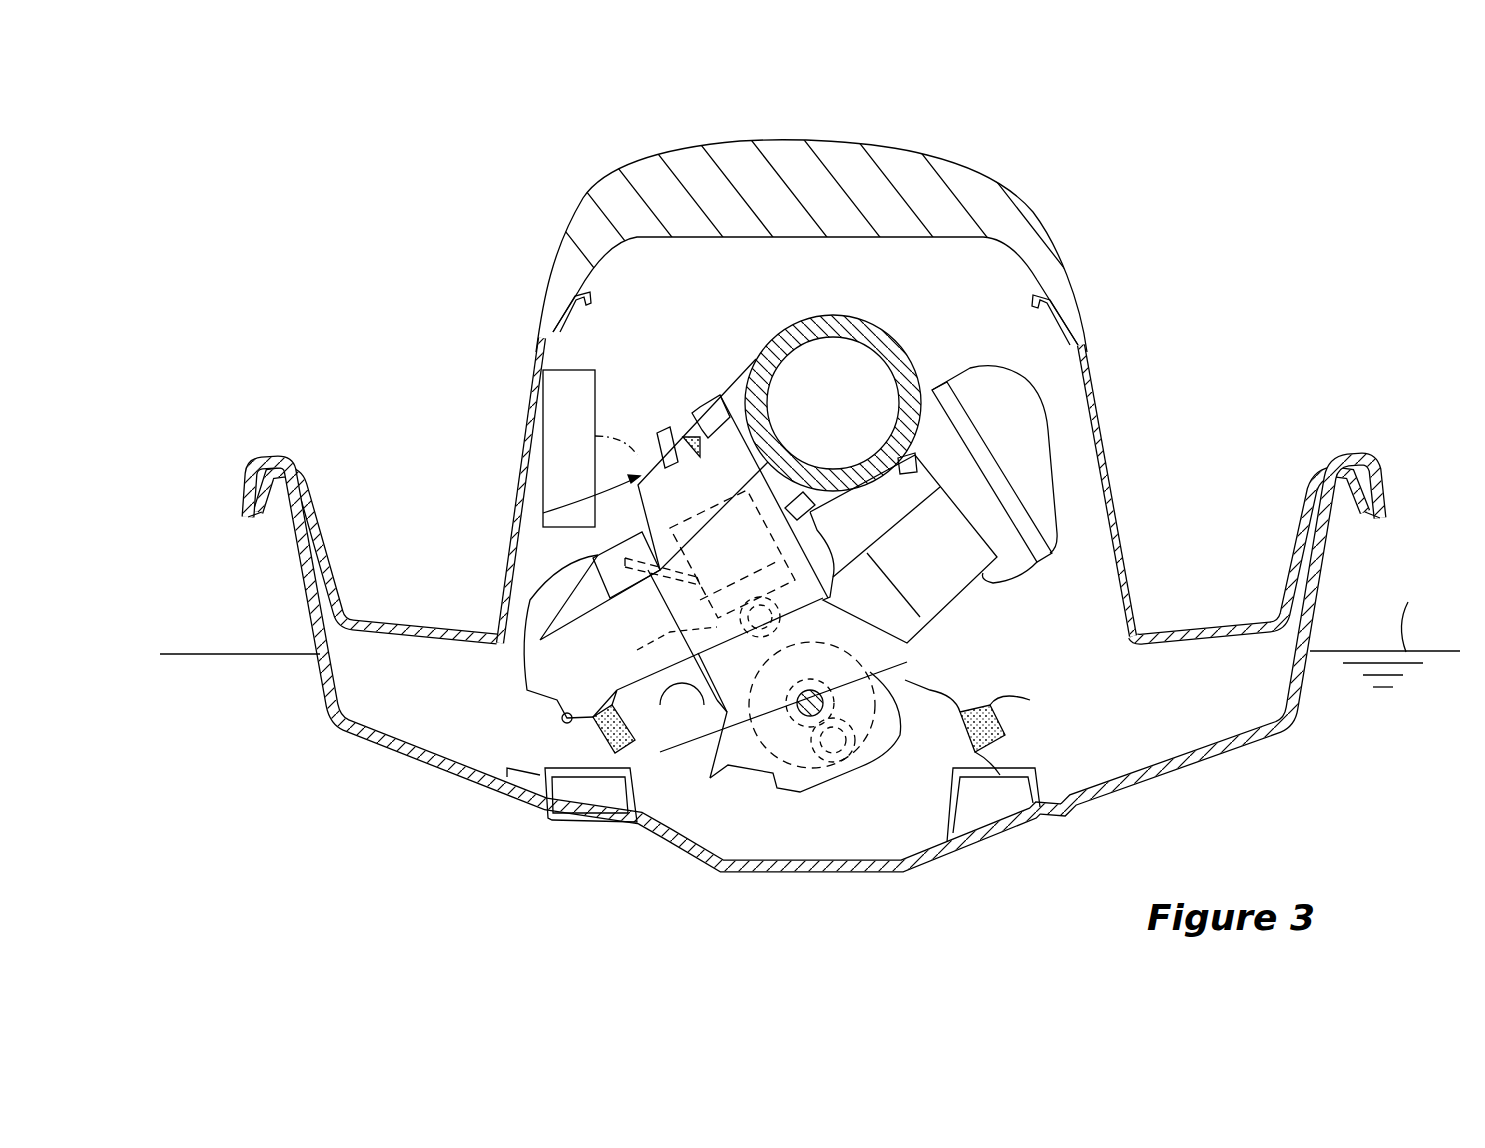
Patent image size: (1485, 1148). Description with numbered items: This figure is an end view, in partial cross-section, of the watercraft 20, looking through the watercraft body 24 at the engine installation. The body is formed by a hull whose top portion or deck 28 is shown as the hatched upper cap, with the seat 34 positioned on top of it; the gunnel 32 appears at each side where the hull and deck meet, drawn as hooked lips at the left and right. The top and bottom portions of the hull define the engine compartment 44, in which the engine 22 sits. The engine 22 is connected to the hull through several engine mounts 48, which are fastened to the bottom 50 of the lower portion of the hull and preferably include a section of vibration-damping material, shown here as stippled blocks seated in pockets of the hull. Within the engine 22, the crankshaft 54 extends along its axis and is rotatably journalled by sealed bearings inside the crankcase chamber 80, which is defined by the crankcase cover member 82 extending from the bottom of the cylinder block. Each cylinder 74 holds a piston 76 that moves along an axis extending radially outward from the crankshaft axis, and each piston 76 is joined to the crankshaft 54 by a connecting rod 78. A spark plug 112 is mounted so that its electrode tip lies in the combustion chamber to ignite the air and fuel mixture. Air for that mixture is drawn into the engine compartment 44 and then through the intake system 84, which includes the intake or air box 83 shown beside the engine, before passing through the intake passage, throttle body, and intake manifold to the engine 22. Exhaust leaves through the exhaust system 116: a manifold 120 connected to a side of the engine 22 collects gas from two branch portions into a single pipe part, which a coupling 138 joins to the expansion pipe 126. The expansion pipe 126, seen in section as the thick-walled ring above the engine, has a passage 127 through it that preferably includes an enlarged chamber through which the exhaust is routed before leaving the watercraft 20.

The watercraft 20 is at (1218, 242).
The engine 22 is at (543, 513).
The watercraft body 24 is at (1192, 366).
The top portion or deck 28 is at (522, 462).
The gunnel 32 is at (247, 493).
The seat 34 is at (997, 210).
The engine compartment 44 is at (610, 275).
The engine mounts 48 is at (607, 750).
The bottom 50 is at (378, 748).
The crankshaft 54 is at (778, 770).
The cylinder 74 is at (737, 523).
The piston 76 is at (709, 651).
The connecting rod 78 is at (717, 748).
The crankcase chamber 80 is at (813, 767).
The crankcase cover member 82 is at (860, 760).
The intake or air box 83 is at (1053, 473).
The intake system 84 is at (963, 630).
The spark plug 112 is at (660, 432).
The exhaust system 116 is at (851, 304).
The manifold 120 is at (520, 683).
The expansion pipe 126 is at (800, 318).
The passage 127 is at (882, 358).
The coupling 138 is at (645, 530).